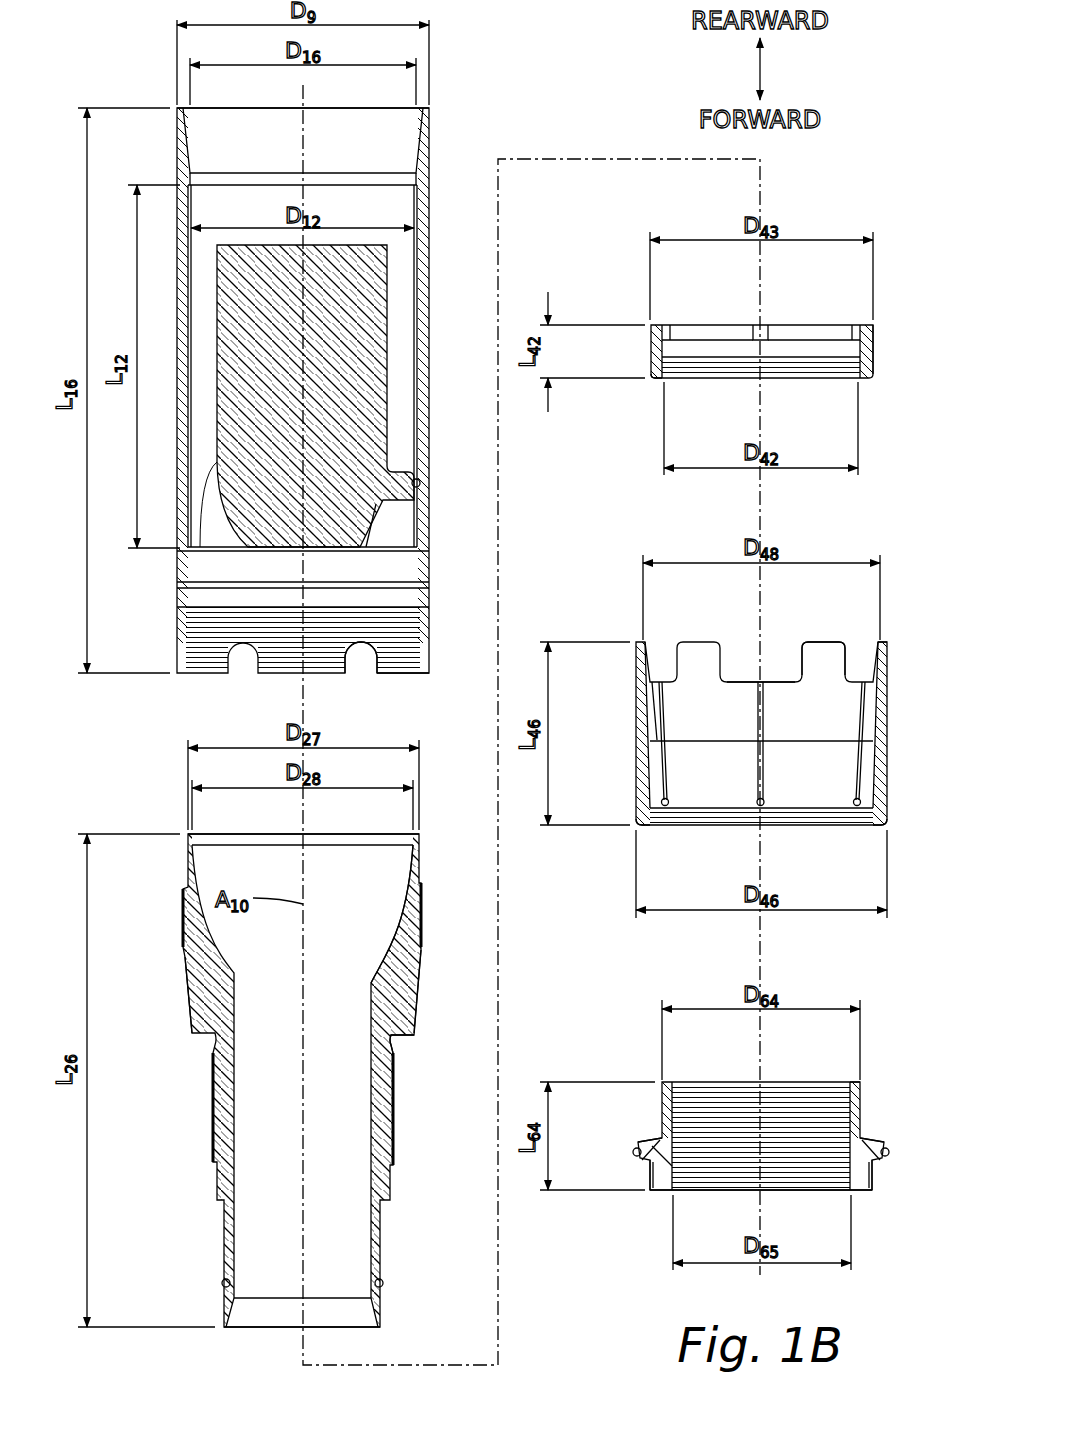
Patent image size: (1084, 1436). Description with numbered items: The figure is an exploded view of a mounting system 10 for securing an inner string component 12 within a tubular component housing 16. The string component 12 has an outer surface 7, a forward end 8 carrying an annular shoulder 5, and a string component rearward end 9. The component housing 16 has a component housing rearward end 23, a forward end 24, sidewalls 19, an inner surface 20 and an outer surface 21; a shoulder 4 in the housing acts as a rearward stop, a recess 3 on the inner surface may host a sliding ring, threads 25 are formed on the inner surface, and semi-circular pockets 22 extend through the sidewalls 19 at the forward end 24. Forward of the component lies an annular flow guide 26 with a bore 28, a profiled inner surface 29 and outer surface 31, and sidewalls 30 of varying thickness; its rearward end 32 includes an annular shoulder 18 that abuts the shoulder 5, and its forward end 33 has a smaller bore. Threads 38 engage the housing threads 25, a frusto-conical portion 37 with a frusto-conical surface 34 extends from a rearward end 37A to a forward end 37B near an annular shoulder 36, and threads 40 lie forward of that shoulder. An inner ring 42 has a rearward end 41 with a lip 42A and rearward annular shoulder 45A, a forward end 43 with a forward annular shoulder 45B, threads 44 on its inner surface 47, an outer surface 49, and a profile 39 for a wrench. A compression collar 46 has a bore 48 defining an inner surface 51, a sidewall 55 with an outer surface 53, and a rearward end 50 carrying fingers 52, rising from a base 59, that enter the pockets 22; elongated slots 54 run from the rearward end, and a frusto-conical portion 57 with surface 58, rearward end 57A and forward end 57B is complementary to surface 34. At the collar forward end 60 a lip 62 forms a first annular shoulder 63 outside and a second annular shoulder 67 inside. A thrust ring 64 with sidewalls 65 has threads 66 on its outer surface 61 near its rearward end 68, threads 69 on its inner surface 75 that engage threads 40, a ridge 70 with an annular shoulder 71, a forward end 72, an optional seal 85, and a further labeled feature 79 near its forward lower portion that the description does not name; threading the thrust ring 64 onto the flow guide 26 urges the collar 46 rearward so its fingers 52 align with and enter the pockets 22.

The mounting system 10 is at (131, 32).
The component housing rearward end 23 is at (288, 106).
The string component rearward end 9 is at (352, 183).
The shoulder 4 is at (427, 188).
The sidewalls 19 is at (423, 258).
The component housing 16 is at (430, 298).
The inner string component 12 is at (340, 362).
The outer surface 7 is at (427, 408).
The inner surface 20 is at (421, 478).
The outer surface 21 is at (429, 528).
The annular shoulder 5 is at (221, 556).
The forward end 8 is at (387, 556).
The recess 3 is at (426, 592).
The threads 25 is at (394, 637).
The pockets 22 is at (363, 648).
The forward end 24 is at (405, 677).
The annular shoulder 18 is at (211, 831).
The rearward end 32 is at (392, 831).
The outer surface 31 is at (423, 860).
The threads 38 is at (424, 895).
The sidewalls 30 is at (410, 920).
The inner surface 29 is at (393, 935).
The frusto-conical surface 34 is at (418, 1003).
The rearward end of frusto-conical portion 37A is at (185, 980).
The frusto-conical portion 37 is at (187, 1005).
The forward end of frusto-conical portion 37B is at (190, 1030).
The annular shoulder 36 is at (395, 1040).
The threads 40 is at (395, 1125).
The flow guide 26 is at (410, 1197).
The bore 28 is at (338, 1233).
The forward end 33 is at (257, 1329).
The rearward end 41 is at (738, 323).
The inner surface 47 is at (664, 350).
The rearward annular shoulder 45A is at (661, 326).
The profile 39 is at (860, 325).
The lip 42A is at (875, 325).
The outer surface 49 is at (876, 347).
The inner ring 42 is at (639, 348).
The forward annular shoulder 45B is at (656, 380).
The forward end 43 is at (712, 381).
The threads 44 is at (832, 370).
The fingers 52 is at (822, 640).
The rearward end 50 is at (858, 628).
The base 59 is at (740, 680).
The rearward end of frusto-conical portion 57A is at (660, 690).
The frusto-conical portion 57 is at (641, 712).
The forward end of frusto-conical portion 57B is at (652, 738).
The elongated slots 54 is at (765, 705).
The frusto-conical surface 58 is at (858, 724).
The outer surface 53 is at (884, 700).
The sidewall 55 is at (880, 746).
The bore 48 is at (828, 775).
The compression collar 46 is at (626, 750).
The inner surface 51 is at (656, 757).
The second annular shoulder 67 is at (668, 799).
The forward end 60 is at (648, 828).
The lip 62 is at (856, 815).
The first annular shoulder 63 is at (876, 828).
The inner surface 75 is at (673, 1098).
The rearward end 68 is at (795, 1082).
The threads 69 is at (849, 1097).
The threads 66 is at (862, 1088).
The annular shoulder 71 is at (876, 1137).
The outer surface 61 is at (889, 1160).
The sidewalls 65 is at (858, 1172).
The thrust ring 64 is at (643, 1106).
The ridge 70 is at (638, 1147).
The seal 85 is at (633, 1156).
The lower flange 79 is at (650, 1186).
The forward end 72 is at (712, 1192).